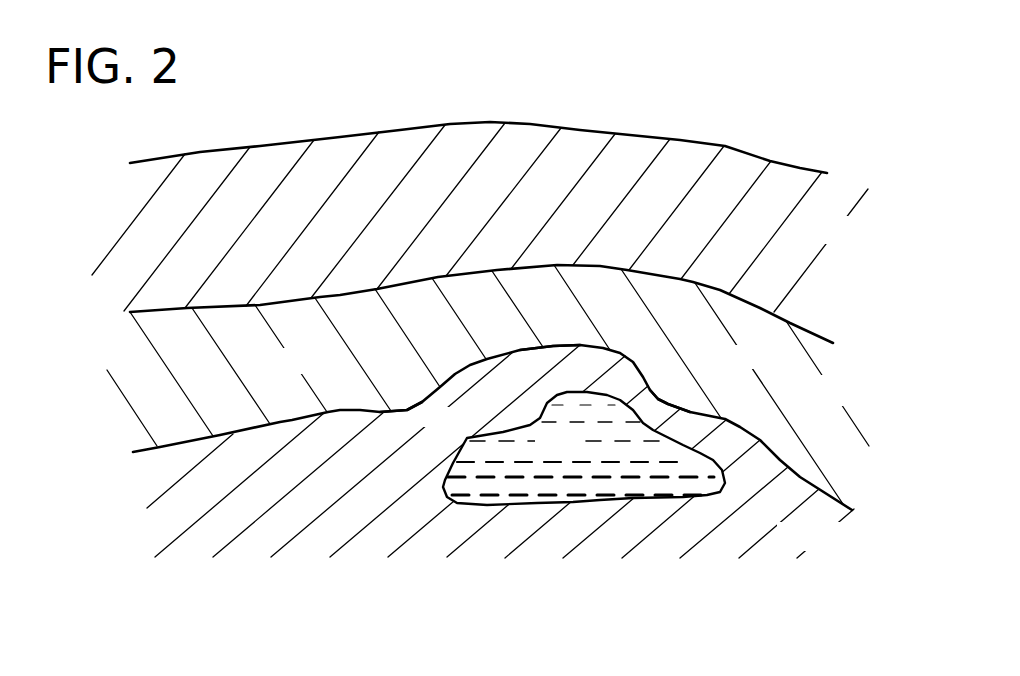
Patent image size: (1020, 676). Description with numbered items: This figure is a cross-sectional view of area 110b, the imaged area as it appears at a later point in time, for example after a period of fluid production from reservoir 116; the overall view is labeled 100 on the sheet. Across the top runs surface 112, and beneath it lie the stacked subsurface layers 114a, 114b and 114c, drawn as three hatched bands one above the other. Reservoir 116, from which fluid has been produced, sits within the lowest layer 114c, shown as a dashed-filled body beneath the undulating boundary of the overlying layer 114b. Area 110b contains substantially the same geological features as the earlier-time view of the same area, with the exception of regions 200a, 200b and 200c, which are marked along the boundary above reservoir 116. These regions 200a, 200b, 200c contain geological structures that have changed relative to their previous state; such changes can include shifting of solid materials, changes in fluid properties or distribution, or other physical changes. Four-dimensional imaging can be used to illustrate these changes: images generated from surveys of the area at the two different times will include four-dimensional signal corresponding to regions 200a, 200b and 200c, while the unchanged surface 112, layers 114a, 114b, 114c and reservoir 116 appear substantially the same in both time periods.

The layered structure 100 is at (632, 104).
The surface 112 is at (725, 148).
The layer 114a is at (851, 242).
The layer 114b is at (846, 404).
The layer 114c is at (842, 550).
The reservoir 116 is at (582, 453).
The area 110b is at (493, 496).
The region 200a is at (398, 396).
The region 200b is at (521, 418).
The region 200c is at (666, 394).